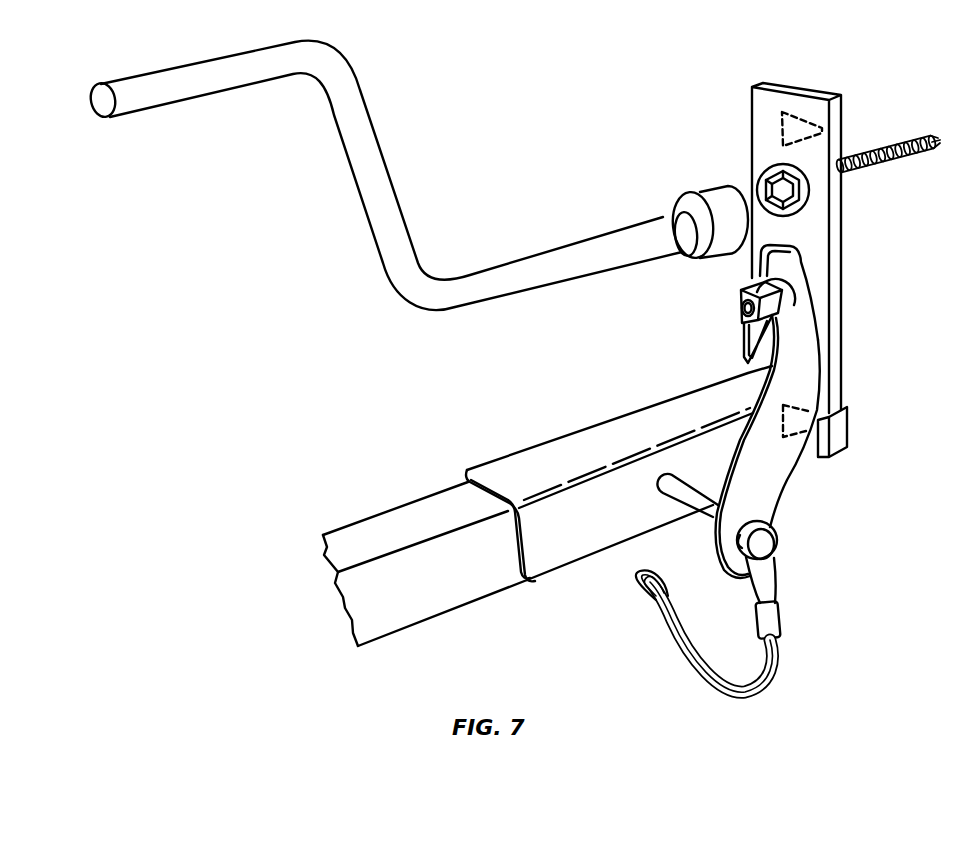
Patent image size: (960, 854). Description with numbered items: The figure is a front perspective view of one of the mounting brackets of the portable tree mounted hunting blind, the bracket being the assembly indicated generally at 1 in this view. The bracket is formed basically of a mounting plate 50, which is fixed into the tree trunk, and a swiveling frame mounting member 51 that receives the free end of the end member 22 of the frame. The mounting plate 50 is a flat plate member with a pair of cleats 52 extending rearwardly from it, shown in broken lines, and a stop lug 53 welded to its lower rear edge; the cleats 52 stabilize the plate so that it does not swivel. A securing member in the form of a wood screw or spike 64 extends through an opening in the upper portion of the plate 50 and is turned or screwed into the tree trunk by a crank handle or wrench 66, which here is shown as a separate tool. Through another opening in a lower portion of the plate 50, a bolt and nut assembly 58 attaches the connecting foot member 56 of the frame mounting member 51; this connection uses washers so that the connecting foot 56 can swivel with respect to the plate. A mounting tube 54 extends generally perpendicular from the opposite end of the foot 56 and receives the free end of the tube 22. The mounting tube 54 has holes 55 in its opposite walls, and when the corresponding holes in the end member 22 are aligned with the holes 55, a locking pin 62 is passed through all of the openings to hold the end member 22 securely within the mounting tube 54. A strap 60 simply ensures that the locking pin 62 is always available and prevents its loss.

The hitch lock device 1 is at (876, 266).
The end member 22 is at (392, 530).
The mounting plate 50 is at (815, 236).
The swiveling frame mounting member 51 is at (682, 364).
The cleats 52 is at (807, 122).
The stop lug 53 is at (845, 440).
The mounting tube 54 is at (593, 448).
The holes 55 is at (659, 486).
The connecting foot member 56 is at (796, 289).
The bolt and nut assembly 58 is at (743, 294).
The strap 60 is at (760, 483).
The locking pin 62 is at (705, 513).
The wood screw or spike 64 is at (877, 150).
The crank handle or wrench 66 is at (378, 195).